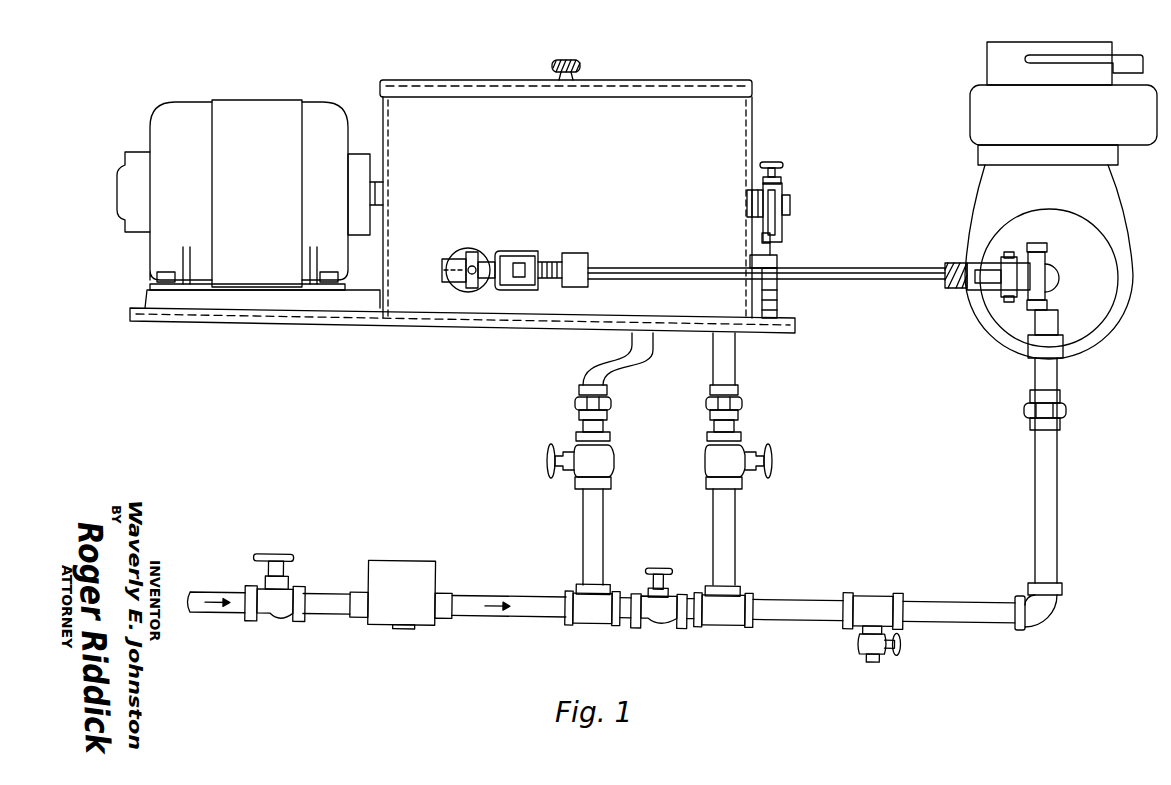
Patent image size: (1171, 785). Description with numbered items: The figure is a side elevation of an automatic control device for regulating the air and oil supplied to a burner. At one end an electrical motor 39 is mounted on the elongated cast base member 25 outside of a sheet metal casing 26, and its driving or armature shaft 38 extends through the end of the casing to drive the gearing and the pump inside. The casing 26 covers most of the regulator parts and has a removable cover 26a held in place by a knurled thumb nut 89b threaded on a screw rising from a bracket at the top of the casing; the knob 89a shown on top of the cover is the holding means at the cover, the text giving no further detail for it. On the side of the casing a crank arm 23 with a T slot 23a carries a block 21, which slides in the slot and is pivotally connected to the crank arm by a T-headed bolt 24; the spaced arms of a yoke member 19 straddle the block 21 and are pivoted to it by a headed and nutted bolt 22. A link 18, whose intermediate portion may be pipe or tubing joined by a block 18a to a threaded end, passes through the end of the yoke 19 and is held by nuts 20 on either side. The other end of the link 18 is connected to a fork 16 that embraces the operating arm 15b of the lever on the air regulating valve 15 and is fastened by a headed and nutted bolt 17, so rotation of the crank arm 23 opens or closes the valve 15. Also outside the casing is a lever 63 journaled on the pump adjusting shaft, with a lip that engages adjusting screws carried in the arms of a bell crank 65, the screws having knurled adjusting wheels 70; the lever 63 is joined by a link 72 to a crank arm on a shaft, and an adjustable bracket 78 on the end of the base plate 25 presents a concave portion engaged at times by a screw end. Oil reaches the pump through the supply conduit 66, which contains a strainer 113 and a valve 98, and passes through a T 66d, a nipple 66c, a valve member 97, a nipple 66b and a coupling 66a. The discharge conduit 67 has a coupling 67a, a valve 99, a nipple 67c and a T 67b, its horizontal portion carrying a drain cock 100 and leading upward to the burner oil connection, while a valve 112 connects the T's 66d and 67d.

The air regulating valve 15 is at (1107, 206).
The operating arm 15b is at (1020, 292).
The fork 16 is at (985, 292).
The headed and nutted bolt 17 is at (1008, 269).
The link 18 is at (800, 270).
The block 18a is at (590, 262).
The yoke member 19 is at (512, 252).
The nuts 20 is at (522, 284).
The block 21 is at (463, 278).
The headed and nutted bolt 22 is at (468, 250).
The crank arm 23 is at (444, 262).
The T slot 23a is at (443, 270).
The T-headed bolt 24 is at (488, 282).
The base member 25 is at (795, 326).
The sheet metal casing 26 is at (745, 127).
The removable cover 26a is at (735, 80).
The shaft 38 is at (349, 252).
The electrical motor 39 is at (162, 240).
The lever 63 is at (758, 225).
The bell crank 65 is at (783, 190).
The conduit 66 is at (526, 614).
The coupling 66a is at (610, 404).
The nipple 66b is at (610, 434).
The nipple 66c is at (604, 523).
The T 66d is at (594, 618).
The discharge conduit 67 is at (1035, 547).
The coupling 67a is at (742, 405).
The T 67b is at (742, 434).
The nipple 67c is at (738, 548).
The T 67d is at (721, 618).
The adjusting knurled wheel 70 is at (784, 165).
The link 72 is at (783, 228).
The bracket 78 is at (778, 297).
The adjusting knob 89a is at (572, 58).
The knurled thumb nut 89b is at (582, 69).
The valve member 97 is at (615, 457).
The valve 98 is at (283, 618).
The valve 99 is at (740, 472).
The drain cock 100 is at (855, 615).
The valve 112 is at (656, 618).
The strainer 113 is at (436, 570).